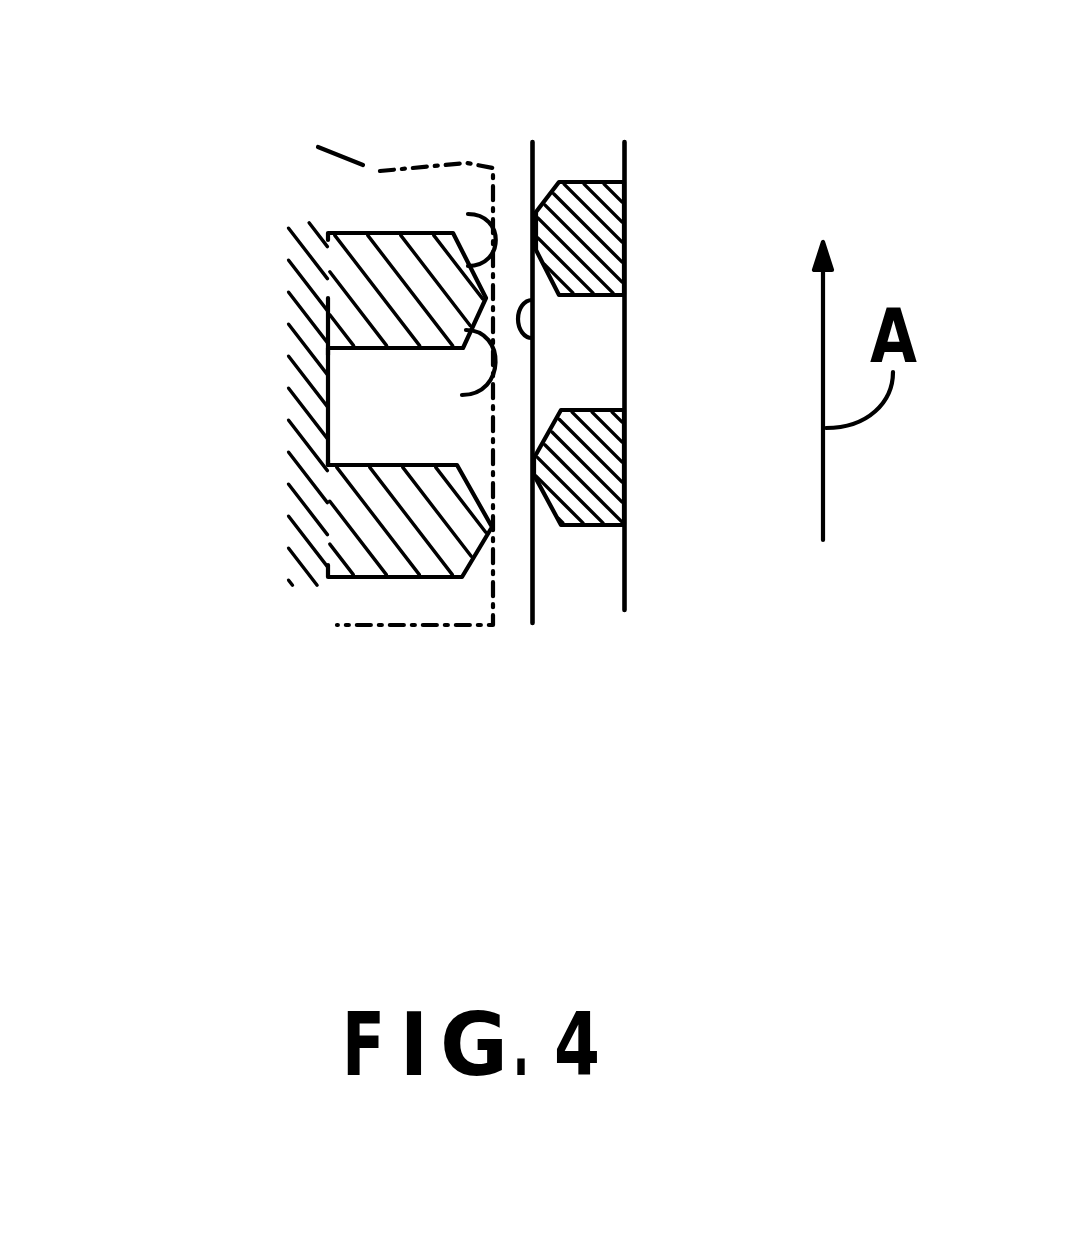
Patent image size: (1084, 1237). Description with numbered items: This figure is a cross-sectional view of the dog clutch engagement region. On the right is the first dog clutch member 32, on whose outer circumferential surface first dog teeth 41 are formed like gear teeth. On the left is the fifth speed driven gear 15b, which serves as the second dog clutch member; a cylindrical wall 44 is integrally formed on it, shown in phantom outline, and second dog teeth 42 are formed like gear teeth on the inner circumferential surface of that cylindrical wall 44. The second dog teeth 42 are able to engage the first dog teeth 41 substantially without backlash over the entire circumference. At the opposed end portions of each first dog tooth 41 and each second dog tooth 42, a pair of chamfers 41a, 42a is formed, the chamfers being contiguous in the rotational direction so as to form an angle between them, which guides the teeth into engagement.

The fifth speed driven gear 15b is at (300, 378).
The first dog clutch member 32 is at (585, 163).
The first dog teeth 41 is at (757, 567).
The chamfer 41a is at (532, 205).
The second dog teeth 42 is at (385, 294).
The chamfer 42a is at (490, 214).
The cylindrical wall 44 is at (363, 165).